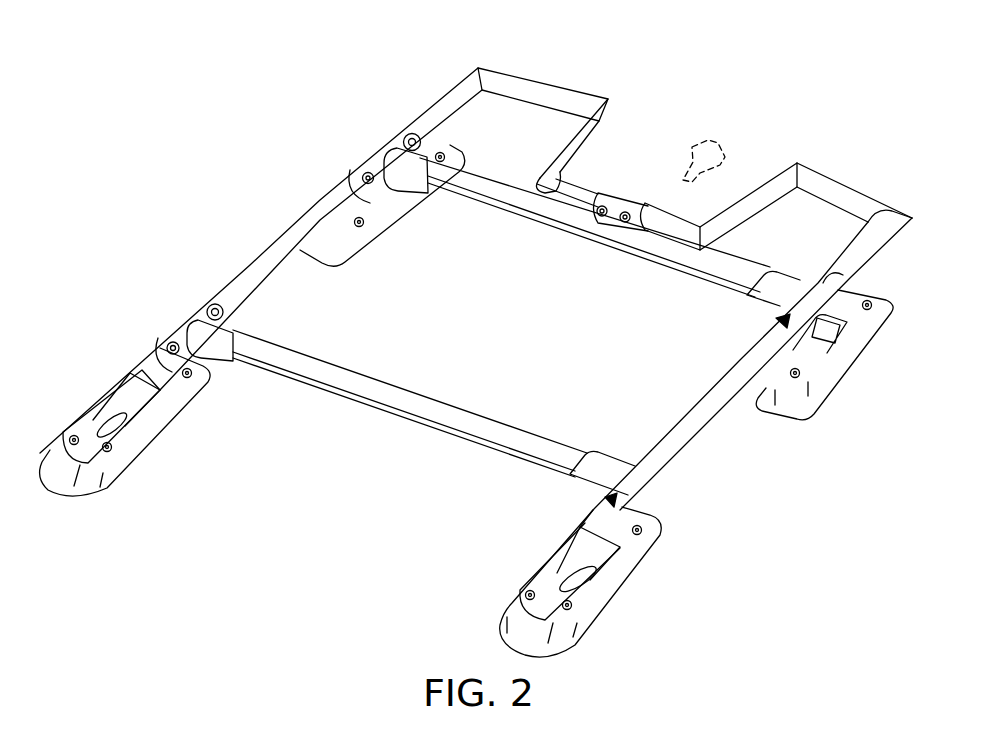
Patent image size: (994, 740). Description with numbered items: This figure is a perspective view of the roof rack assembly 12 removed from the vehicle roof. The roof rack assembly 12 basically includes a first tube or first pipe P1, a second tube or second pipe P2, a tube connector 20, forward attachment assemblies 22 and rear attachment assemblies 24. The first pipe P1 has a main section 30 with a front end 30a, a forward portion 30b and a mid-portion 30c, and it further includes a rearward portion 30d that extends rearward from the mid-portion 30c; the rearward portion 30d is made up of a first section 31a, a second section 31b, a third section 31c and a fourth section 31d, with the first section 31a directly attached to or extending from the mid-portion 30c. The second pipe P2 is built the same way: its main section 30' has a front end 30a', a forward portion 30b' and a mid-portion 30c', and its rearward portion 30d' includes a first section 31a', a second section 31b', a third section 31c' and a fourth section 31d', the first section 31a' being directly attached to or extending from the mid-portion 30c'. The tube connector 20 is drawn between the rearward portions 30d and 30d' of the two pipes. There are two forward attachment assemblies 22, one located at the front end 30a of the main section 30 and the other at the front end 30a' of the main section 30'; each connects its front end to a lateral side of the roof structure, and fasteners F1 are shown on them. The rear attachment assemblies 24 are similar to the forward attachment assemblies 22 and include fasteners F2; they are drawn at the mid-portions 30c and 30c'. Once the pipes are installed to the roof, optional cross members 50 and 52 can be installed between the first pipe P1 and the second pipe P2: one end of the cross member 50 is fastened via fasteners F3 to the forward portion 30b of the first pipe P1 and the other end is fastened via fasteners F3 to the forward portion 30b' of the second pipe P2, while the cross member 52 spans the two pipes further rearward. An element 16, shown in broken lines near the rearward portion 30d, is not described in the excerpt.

The roof rack assembly 12 is at (172, 233).
The strap / attachment element 16 is at (693, 135).
The tube connector 20 is at (613, 214).
The forward attachment assembly 22 is at (127, 468).
The rear attachment assembly 24 is at (418, 212).
The main section 30 is at (261, 260).
The main section 30' is at (746, 372).
The front end 30a is at (99, 397).
The front end 30a' is at (565, 537).
The forward portion 30b is at (214, 263).
The forward portion 30b' is at (674, 500).
The mid-portion 30c is at (323, 183).
The mid-portion 30c' is at (829, 343).
The rearward portion 30d is at (598, 30).
The rearward portion 30d' is at (827, 112).
The first section 31a is at (500, 55).
The second section 31b is at (543, 77).
The third section 31c is at (586, 117).
The fourth section 31d is at (610, 131).
The first section 31a' is at (890, 196).
The second section 31b' is at (854, 175).
The third section 31c' is at (762, 182).
The fourth section 31d' is at (707, 176).
The cross member 50 is at (385, 393).
The cross member 52 is at (503, 193).
The fasteners F1 is at (79, 440).
The fasteners F2 is at (445, 152).
The fasteners F3 is at (170, 343).
The first pipe P1 is at (284, 230).
The second pipe P2 is at (671, 429).